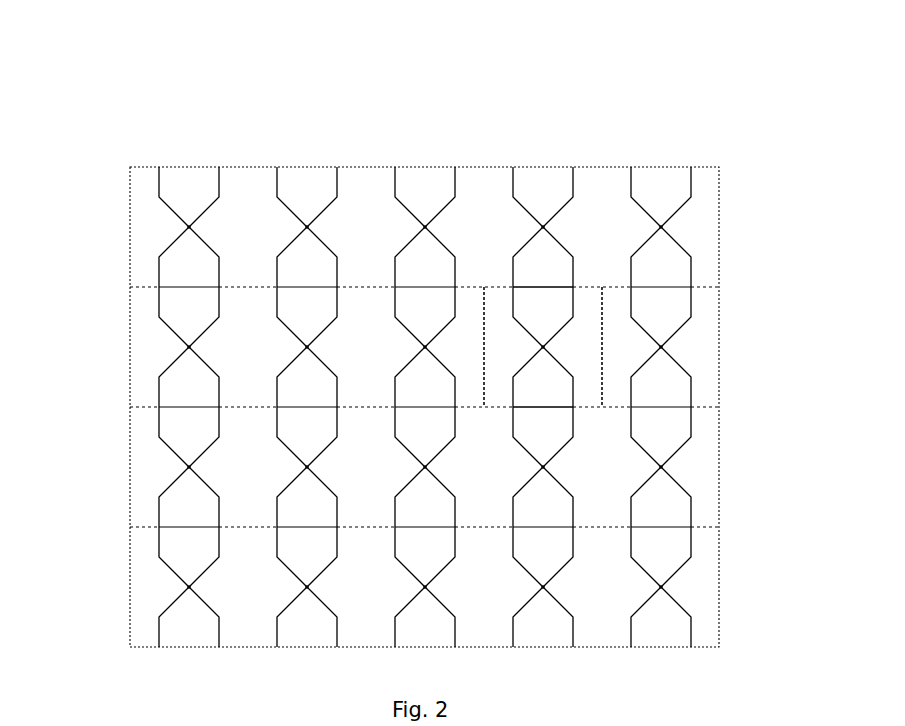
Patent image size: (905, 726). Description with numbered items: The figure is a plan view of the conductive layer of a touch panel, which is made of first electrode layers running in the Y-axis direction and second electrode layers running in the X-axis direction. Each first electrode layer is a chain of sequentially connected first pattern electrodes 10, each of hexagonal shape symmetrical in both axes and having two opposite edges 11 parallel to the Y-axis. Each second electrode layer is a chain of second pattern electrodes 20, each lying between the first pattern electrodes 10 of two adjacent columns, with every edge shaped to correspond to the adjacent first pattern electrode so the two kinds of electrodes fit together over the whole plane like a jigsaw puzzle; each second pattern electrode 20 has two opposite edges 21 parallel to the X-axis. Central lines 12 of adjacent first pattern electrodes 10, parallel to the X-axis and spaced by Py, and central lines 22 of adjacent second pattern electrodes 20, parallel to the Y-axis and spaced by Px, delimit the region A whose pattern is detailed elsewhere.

The first pattern electrode 10 is at (308, 278).
The edge of first pattern electrode 11 is at (452, 285).
The central line of first pattern electrode 12 is at (587, 403).
The second pattern electrode 20 is at (252, 248).
The edge of second pattern electrode 21 is at (242, 288).
The central line of second pattern electrode 22 is at (487, 350).
The region A is at (603, 323).